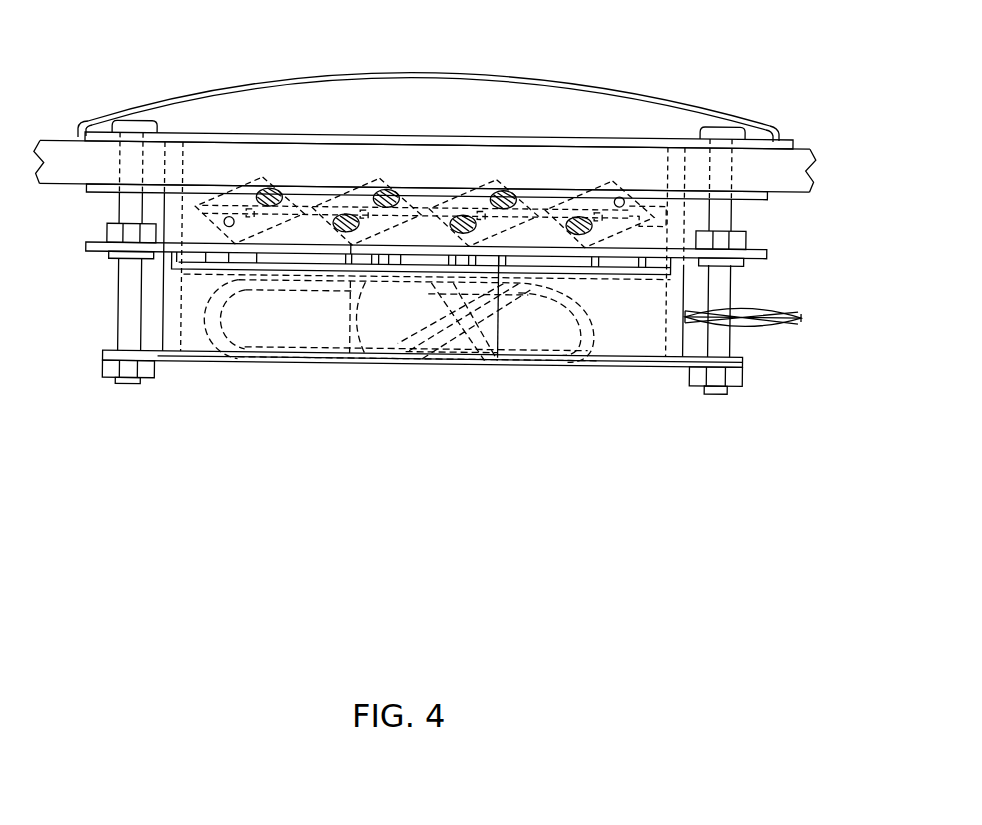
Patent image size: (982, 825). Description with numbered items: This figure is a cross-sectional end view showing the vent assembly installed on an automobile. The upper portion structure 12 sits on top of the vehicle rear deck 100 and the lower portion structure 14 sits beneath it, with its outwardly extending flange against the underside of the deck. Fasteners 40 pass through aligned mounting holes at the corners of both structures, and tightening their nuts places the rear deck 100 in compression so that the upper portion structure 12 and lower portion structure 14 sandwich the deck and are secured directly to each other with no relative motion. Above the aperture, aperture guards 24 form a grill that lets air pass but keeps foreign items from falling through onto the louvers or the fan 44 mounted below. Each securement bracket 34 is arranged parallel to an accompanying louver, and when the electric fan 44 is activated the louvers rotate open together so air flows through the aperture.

The upper portion structure 12 is at (625, 133).
The aperture guards 24 is at (730, 120).
The vehicle rear deck 100 is at (805, 195).
The lower portion structure 14 is at (222, 362).
The fasteners 40 is at (118, 290).
The securement bracket 34 is at (247, 180).
The fan 44 is at (402, 322).